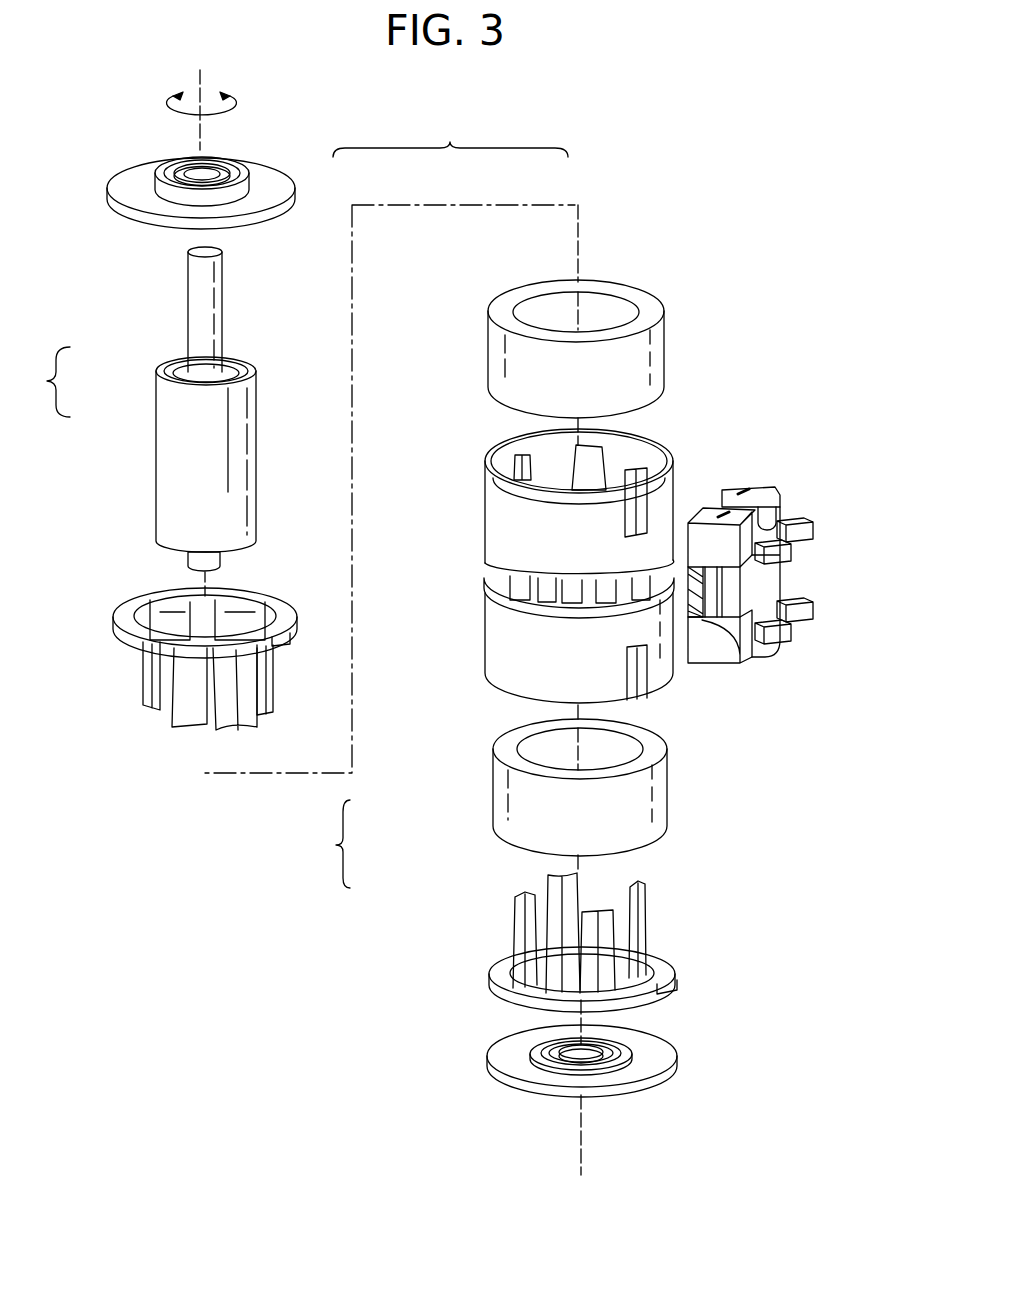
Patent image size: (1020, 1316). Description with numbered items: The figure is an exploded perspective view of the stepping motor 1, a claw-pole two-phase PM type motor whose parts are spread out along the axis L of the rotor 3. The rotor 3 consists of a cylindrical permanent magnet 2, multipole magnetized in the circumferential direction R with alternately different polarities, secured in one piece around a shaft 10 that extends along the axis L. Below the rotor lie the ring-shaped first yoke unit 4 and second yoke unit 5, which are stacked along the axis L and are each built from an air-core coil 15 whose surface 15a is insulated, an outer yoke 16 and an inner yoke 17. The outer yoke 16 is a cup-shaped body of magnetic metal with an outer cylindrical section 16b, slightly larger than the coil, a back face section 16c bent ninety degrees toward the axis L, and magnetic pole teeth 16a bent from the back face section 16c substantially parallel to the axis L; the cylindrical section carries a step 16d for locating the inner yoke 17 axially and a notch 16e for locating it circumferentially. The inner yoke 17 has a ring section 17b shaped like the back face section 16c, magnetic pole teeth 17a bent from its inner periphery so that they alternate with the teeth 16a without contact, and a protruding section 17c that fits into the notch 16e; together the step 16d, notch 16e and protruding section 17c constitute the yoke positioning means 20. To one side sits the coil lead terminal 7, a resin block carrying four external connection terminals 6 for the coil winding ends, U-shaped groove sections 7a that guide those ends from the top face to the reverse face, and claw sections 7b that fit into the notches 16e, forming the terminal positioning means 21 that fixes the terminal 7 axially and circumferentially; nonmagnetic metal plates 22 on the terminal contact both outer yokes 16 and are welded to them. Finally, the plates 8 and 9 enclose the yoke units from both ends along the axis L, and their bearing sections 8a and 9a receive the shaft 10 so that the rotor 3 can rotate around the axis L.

The stepping motor 1 is at (694, 180).
The permanent magnet 2 is at (167, 418).
The rotor 3 is at (143, 423).
The first yoke unit 4 is at (450, 134).
The second yoke unit 5 is at (333, 844).
The external connection terminals 6 is at (793, 553).
The coil lead terminal 7 is at (775, 554).
The U-shaped groove sections 7a is at (777, 506).
The claw sections 7b is at (727, 493).
The plate 8 is at (208, 170).
The bearing section 8a is at (165, 165).
The plate 9 is at (595, 1083).
The bearing section 9a is at (557, 1070).
The shaft 10 is at (187, 323).
The air-core coil 15 is at (555, 509).
The surface of air-core coil 15a is at (667, 323).
The outer yoke 16 is at (564, 493).
The magnetic pole teeth of outer yoke 16a is at (500, 458).
The outer cylindrical section 16b is at (487, 527).
The back face section 16c is at (485, 582).
The step 16d is at (516, 438).
The notch 16e is at (688, 494).
The inner yoke 17 is at (386, 588).
The magnetic pole teeth of inner yoke 17a is at (190, 703).
The ring section 17b is at (133, 620).
The protruding section 17c is at (270, 657).
The yoke positioning means 20 is at (645, 645).
The terminal positioning means 21 is at (734, 466).
The nonmagnetic metal plates 22 is at (758, 653).
The axis L is at (203, 78).
The circumferential direction R is at (222, 99).